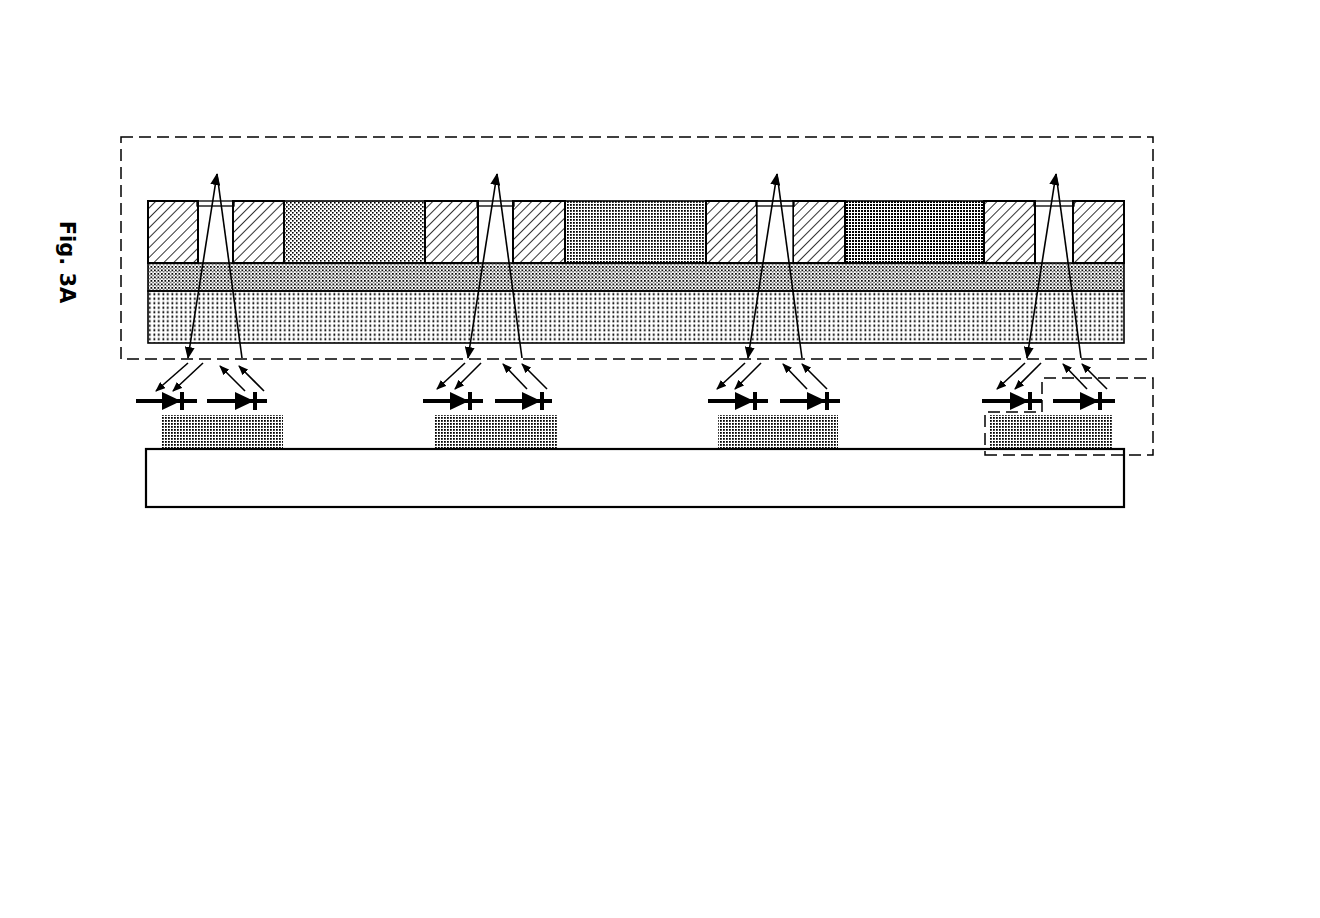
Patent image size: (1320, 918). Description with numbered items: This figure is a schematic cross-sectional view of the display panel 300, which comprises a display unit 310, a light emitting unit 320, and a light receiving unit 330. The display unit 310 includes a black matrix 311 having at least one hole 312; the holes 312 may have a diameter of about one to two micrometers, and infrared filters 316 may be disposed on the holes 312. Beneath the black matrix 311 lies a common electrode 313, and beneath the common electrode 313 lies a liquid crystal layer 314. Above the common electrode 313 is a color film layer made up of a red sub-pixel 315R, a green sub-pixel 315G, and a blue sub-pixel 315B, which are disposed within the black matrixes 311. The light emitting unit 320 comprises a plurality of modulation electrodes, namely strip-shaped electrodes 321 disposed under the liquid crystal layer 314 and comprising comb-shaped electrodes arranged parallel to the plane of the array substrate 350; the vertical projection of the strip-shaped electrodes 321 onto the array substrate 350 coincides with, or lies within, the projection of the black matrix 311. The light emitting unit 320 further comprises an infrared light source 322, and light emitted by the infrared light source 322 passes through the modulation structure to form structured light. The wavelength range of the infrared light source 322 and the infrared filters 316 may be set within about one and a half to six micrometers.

The display panel 300 is at (1205, 50).
The display unit 310 is at (237, 136).
The black matrix 311 is at (1100, 200).
The hole 312 is at (770, 227).
The common electrode 313 is at (1125, 270).
The liquid crystal layer 314 is at (1125, 322).
The red sub-pixel 315R is at (340, 202).
The green sub-pixel 315G is at (620, 200).
The blue sub-pixel 315B is at (912, 200).
The infrared filter 316 is at (508, 200).
The light emitting unit 320 is at (1153, 428).
The strip-shaped electrode 321 is at (840, 427).
The infrared light source 322 is at (840, 397).
The light receiving unit 330 is at (713, 397).
The array substrate 350 is at (1125, 497).